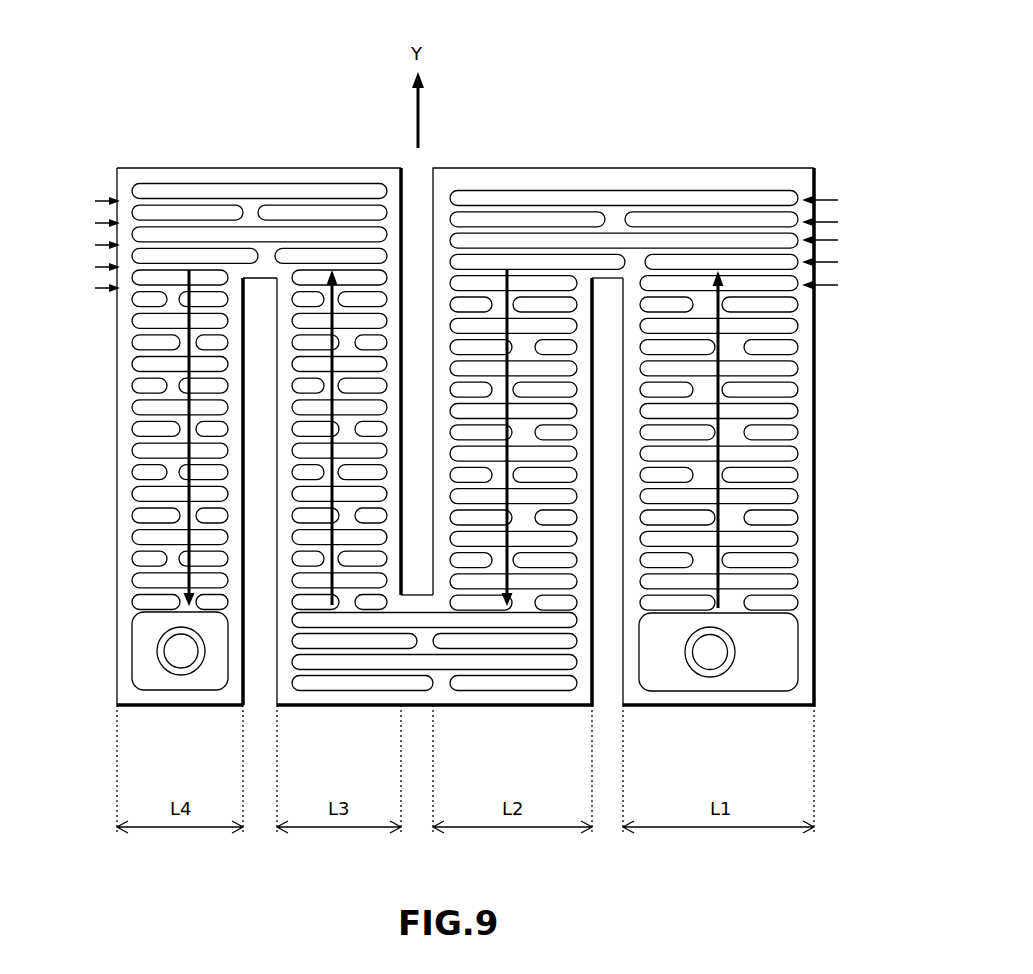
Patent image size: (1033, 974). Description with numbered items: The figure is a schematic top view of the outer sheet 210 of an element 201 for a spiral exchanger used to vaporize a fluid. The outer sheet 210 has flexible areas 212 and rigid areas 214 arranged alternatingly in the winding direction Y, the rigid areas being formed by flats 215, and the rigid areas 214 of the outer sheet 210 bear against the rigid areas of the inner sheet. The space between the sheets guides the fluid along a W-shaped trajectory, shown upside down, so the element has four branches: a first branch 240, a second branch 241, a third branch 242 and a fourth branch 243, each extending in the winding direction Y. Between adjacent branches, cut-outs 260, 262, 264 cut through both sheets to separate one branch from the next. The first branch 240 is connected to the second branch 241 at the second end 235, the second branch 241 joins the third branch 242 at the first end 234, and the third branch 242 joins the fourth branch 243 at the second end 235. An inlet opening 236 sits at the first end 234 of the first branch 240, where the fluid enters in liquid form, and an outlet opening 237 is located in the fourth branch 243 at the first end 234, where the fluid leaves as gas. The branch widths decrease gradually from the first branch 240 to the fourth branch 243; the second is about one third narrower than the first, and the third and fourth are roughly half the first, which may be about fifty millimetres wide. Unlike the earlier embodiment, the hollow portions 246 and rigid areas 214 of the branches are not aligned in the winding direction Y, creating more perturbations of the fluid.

The element 201 is at (95, 170).
The outer sheet 210 is at (230, 165).
The flexible areas 212 is at (96, 201).
The rigid areas 214 is at (838, 200).
The flats 215 is at (745, 198).
The first end 234 is at (96, 715).
The second end 235 is at (108, 135).
The inlet opening 236 is at (712, 655).
The outlet opening 237 is at (181, 655).
The first branch 240 is at (780, 428).
The second branch 241 is at (540, 315).
The third branch 242 is at (338, 480).
The fourth branch 243 is at (135, 372).
The hollow portions 246 is at (173, 300).
The cut-out 260 is at (610, 612).
The cut-out 262 is at (415, 180).
The cut-out 264 is at (258, 612).